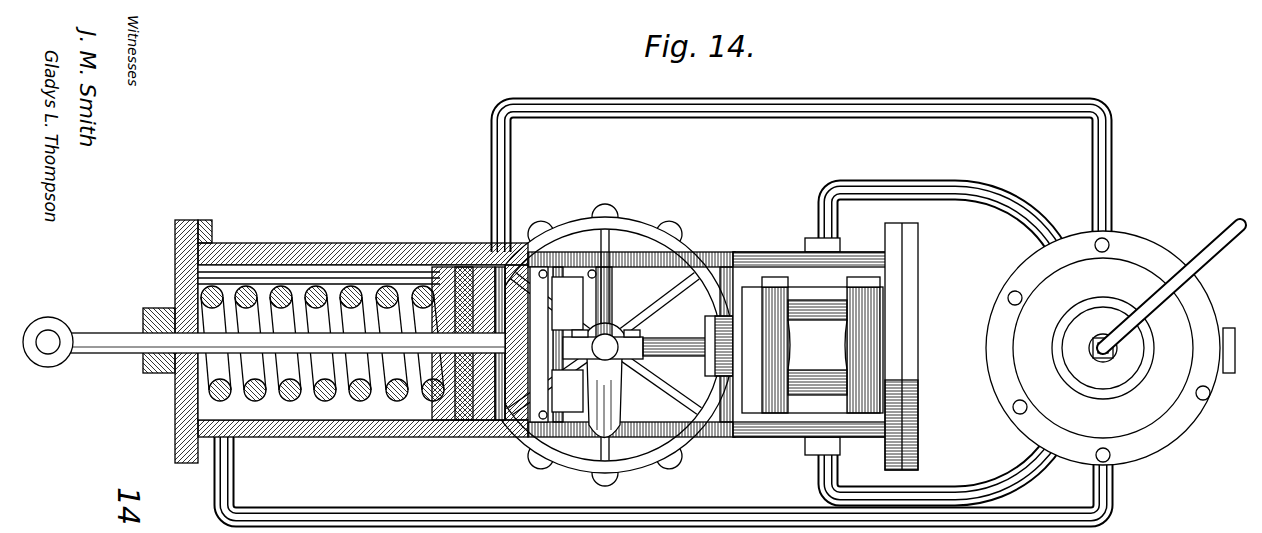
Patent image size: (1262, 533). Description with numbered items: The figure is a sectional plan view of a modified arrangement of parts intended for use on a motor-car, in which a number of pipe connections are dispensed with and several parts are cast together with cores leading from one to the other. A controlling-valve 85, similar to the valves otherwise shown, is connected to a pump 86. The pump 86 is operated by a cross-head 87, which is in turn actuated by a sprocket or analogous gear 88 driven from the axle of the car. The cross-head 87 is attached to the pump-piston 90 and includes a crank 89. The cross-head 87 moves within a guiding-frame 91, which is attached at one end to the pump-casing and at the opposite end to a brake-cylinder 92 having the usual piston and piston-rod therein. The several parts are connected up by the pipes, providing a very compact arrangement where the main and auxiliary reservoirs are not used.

The controlling-valve 85 is at (1037, 390).
The pump 86 is at (773, 290).
The cross-head 87 is at (596, 305).
The sprocket gear 88 is at (626, 223).
The crank 89 is at (617, 383).
The pump-piston 90 is at (668, 344).
The guiding-frame 91 is at (697, 260).
The brake-cylinder 92 is at (388, 250).